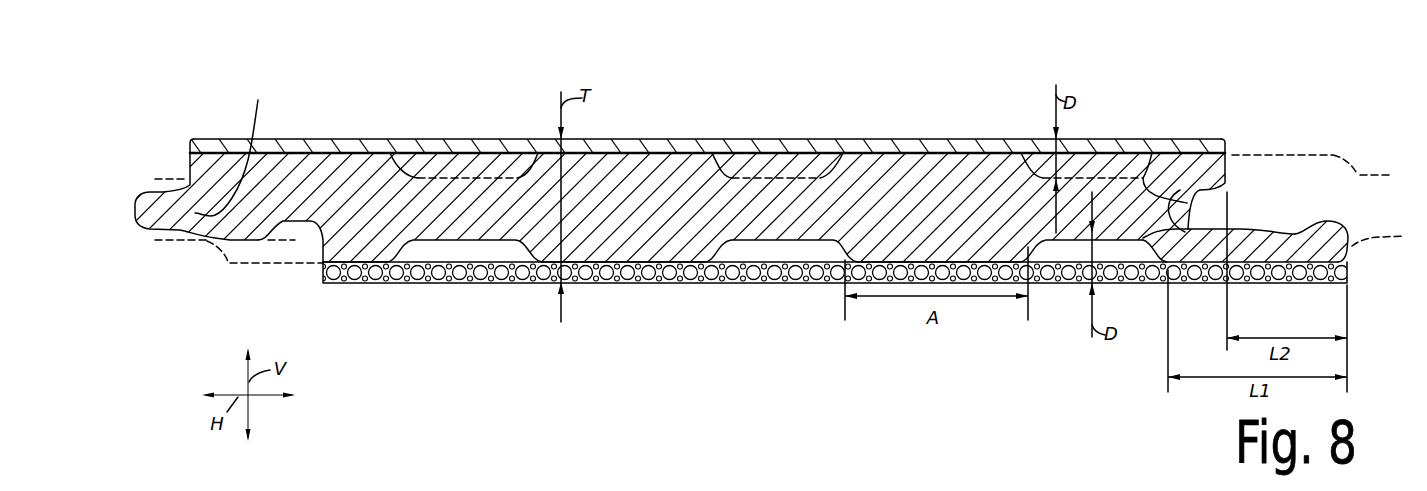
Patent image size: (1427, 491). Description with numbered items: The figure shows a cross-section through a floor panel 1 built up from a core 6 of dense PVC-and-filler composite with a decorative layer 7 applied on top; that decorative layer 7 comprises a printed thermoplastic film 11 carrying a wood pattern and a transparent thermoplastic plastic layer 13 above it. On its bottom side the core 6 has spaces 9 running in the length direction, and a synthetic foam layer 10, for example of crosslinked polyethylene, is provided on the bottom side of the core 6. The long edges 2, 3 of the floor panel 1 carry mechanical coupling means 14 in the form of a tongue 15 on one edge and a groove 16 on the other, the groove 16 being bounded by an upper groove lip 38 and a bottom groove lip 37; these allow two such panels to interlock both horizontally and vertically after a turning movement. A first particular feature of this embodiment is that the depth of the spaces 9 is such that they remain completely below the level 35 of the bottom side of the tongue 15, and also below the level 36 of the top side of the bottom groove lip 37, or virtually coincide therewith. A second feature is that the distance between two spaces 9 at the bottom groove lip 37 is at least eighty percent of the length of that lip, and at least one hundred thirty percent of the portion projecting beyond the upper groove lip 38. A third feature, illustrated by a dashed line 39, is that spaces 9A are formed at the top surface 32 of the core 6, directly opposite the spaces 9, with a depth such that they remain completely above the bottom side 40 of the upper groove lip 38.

The floor panel 1 is at (720, 125).
The long edge 2 is at (1304, 164).
The long edge 3 is at (196, 285).
The core 6 is at (670, 228).
The decorative layer 7 is at (178, 155).
The spaces 9 is at (487, 250).
The spaces 9A is at (806, 157).
The synthetic foam layer 10 is at (750, 272).
The printed thermoplastic film 11 is at (488, 155).
The transparent thermoplastic plastic layer 13 is at (938, 140).
The mechanical coupling means 14 is at (282, 287).
The tongue 15 is at (237, 145).
The groove 16 is at (1153, 152).
The top surface 32 is at (623, 142).
The level of the bottom side of the tongue 35 is at (252, 264).
The level of the top side of bottom groove lip 36 is at (1275, 243).
The bottom groove lip 37 is at (1258, 250).
The upper groove lip 38 is at (1194, 178).
The dashed line 39 is at (490, 173).
The bottom side of upper groove lip 40 is at (1160, 240).